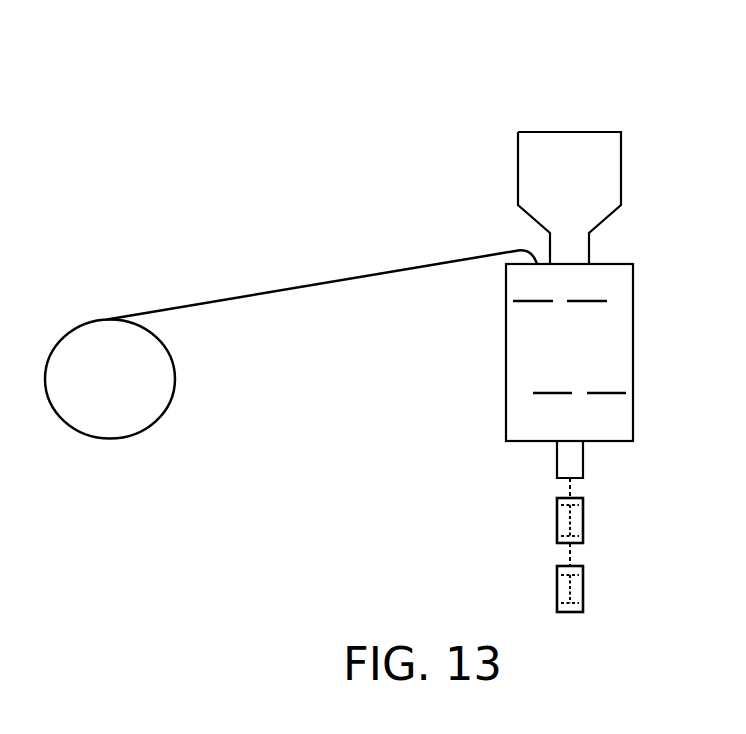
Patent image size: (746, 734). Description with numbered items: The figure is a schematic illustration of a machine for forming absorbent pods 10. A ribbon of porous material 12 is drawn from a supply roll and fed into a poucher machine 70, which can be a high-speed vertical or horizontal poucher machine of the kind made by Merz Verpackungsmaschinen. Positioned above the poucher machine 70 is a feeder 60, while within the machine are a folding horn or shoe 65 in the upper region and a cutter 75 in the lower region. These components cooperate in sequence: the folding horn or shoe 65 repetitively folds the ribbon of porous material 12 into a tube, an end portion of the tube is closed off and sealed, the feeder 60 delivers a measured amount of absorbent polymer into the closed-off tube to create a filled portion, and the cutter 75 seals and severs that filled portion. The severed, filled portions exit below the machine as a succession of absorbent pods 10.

The absorbent pod 10 is at (583, 519).
The ribbon of porous material 12 is at (340, 281).
The feeder 60 is at (571, 147).
The folding horn or shoe 65 is at (615, 285).
The poucher machine 70 is at (633, 346).
The cutter 75 is at (615, 418).